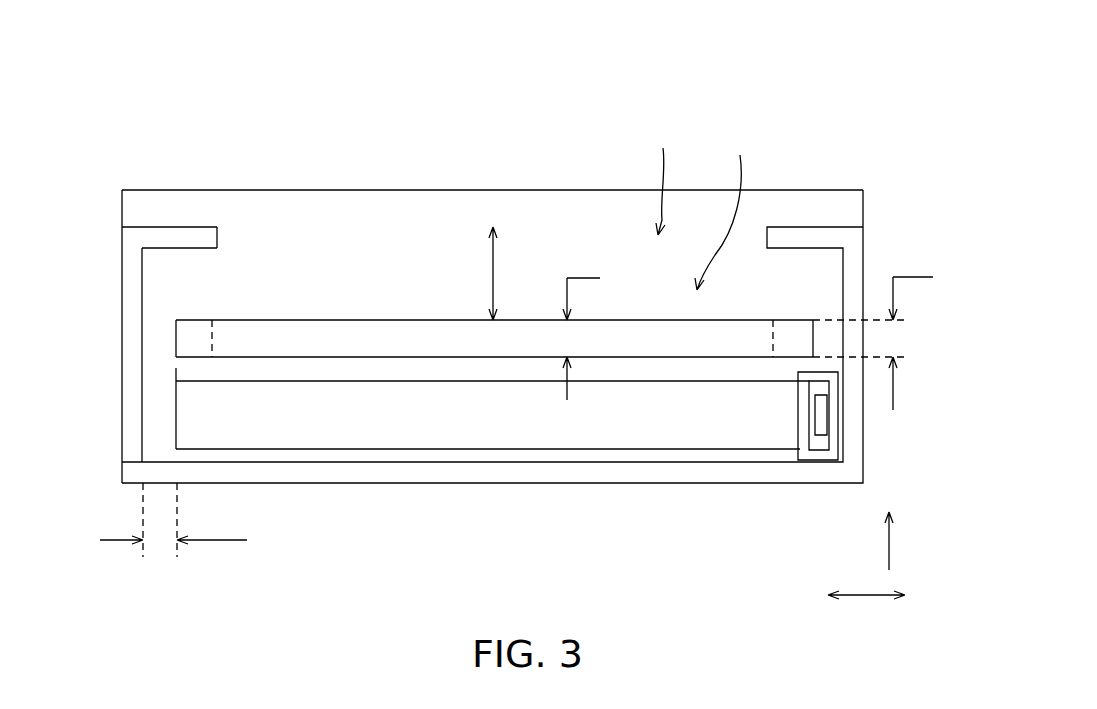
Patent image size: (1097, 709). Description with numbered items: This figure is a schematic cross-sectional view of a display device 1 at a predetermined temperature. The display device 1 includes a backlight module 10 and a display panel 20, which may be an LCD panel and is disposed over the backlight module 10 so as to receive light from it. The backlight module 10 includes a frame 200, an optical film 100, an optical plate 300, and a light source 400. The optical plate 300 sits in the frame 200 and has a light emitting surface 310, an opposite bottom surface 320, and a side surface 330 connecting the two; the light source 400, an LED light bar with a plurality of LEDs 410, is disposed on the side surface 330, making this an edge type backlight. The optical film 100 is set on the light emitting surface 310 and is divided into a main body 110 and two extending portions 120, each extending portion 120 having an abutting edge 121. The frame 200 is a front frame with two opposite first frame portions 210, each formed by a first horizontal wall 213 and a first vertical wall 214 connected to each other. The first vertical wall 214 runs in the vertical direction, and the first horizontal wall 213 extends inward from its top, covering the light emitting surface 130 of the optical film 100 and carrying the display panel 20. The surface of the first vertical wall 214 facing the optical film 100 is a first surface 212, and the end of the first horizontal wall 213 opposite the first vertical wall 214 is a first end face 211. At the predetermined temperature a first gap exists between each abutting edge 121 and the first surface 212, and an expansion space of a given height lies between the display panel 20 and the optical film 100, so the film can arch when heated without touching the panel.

The display device 1 is at (809, 37).
The backlight module 10 is at (867, 243).
The display panel 20 is at (863, 172).
The optical film 100 is at (437, 335).
The main body 110 is at (240, 330).
The extending portions 120 is at (192, 330).
The abutting edge 121 is at (175, 347).
The light emitting surface 130 is at (372, 320).
The frame 200 is at (135, 433).
The first frame portion 210 is at (53, 142).
The first end face 211 is at (220, 238).
The first surface 212 is at (142, 272).
The first horizontal wall 213 is at (168, 237).
The first vertical wall 214 is at (130, 278).
The optical plate 300 is at (435, 430).
The light emitting surface 310 is at (352, 382).
The bottom surface 320 is at (677, 450).
The side surface 330 is at (809, 418).
The light source 400 is at (835, 430).
The LEDs 410 is at (822, 430).